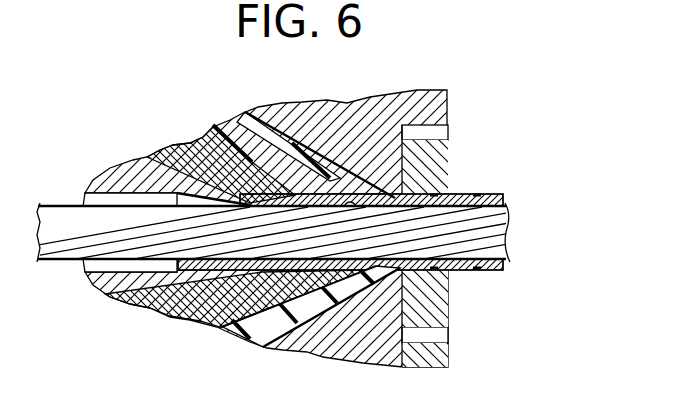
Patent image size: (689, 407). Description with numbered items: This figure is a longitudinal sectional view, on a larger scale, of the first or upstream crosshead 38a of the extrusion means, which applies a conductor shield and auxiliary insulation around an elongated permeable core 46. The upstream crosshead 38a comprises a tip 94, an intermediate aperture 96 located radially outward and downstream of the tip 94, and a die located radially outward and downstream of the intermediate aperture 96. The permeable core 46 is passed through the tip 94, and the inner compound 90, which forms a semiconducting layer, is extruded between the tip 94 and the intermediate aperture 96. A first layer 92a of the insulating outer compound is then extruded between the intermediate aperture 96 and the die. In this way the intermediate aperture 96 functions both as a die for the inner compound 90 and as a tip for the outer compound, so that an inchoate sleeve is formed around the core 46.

The upstream crosshead 38a is at (275, 86).
The permeable core 46 is at (520, 227).
The inner compound 90 is at (217, 297).
The first layer of outer compound 92a is at (357, 283).
The tip 94 is at (227, 140).
The intermediate aperture 96 is at (347, 202).